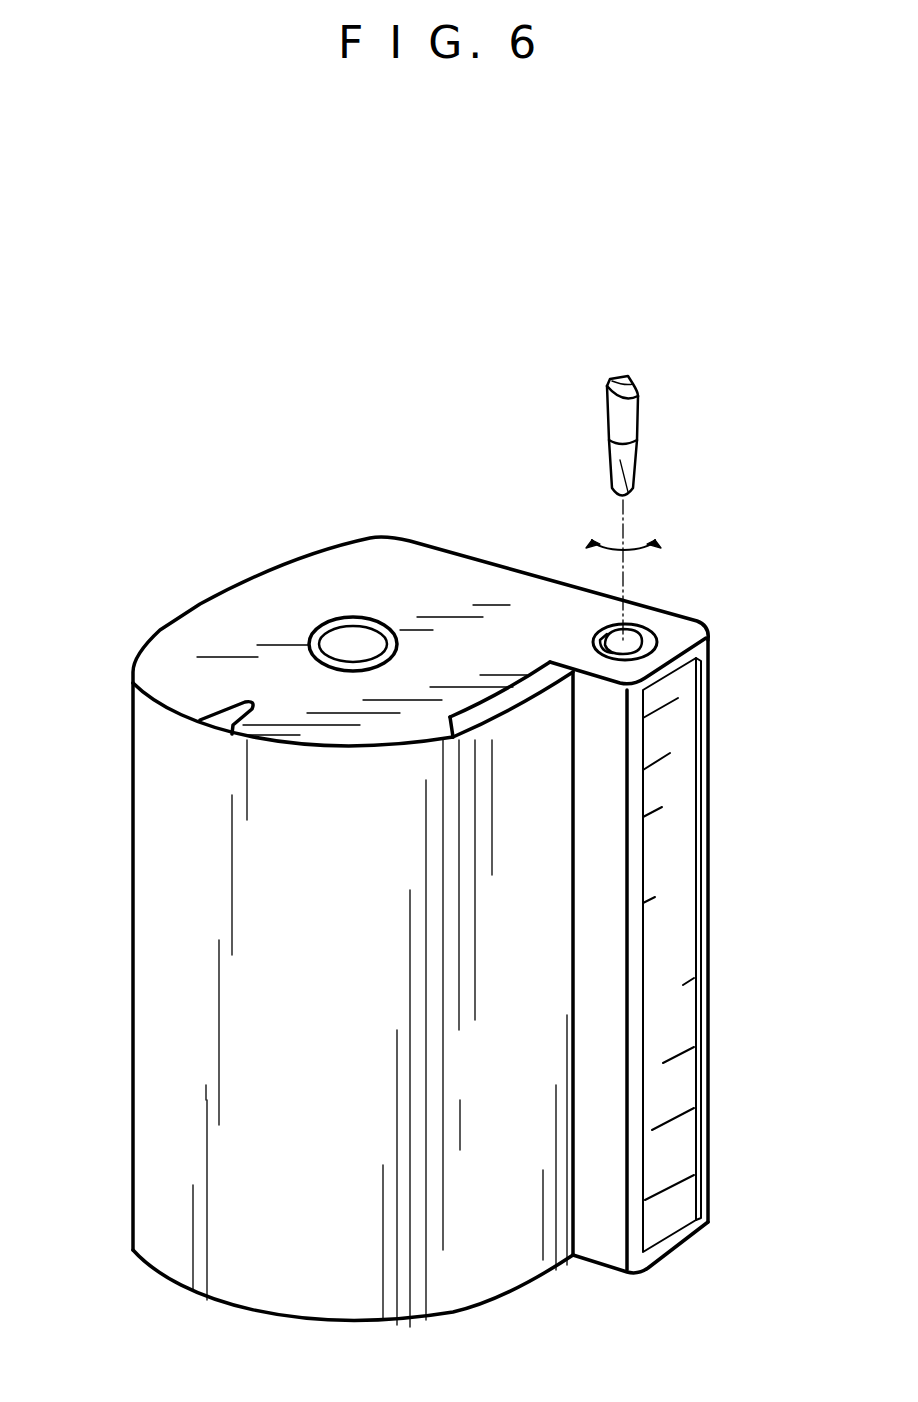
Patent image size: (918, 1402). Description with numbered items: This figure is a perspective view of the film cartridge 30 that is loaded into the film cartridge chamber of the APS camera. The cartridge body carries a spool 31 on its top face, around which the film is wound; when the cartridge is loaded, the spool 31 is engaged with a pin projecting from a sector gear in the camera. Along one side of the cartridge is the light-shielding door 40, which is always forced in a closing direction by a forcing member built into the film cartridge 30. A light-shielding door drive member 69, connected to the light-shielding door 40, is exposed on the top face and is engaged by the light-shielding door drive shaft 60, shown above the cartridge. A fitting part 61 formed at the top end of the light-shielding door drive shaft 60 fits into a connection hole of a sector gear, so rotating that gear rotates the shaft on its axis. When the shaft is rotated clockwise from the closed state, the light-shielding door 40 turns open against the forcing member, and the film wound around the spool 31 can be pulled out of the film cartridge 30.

The film cartridge 30 is at (190, 605).
The spool 31 is at (355, 642).
The light-shielding door 40 is at (677, 807).
The light-shielding door drive shaft 60 is at (628, 457).
The fitting part 61 is at (630, 378).
The light-shielding door drive member 69 is at (643, 625).